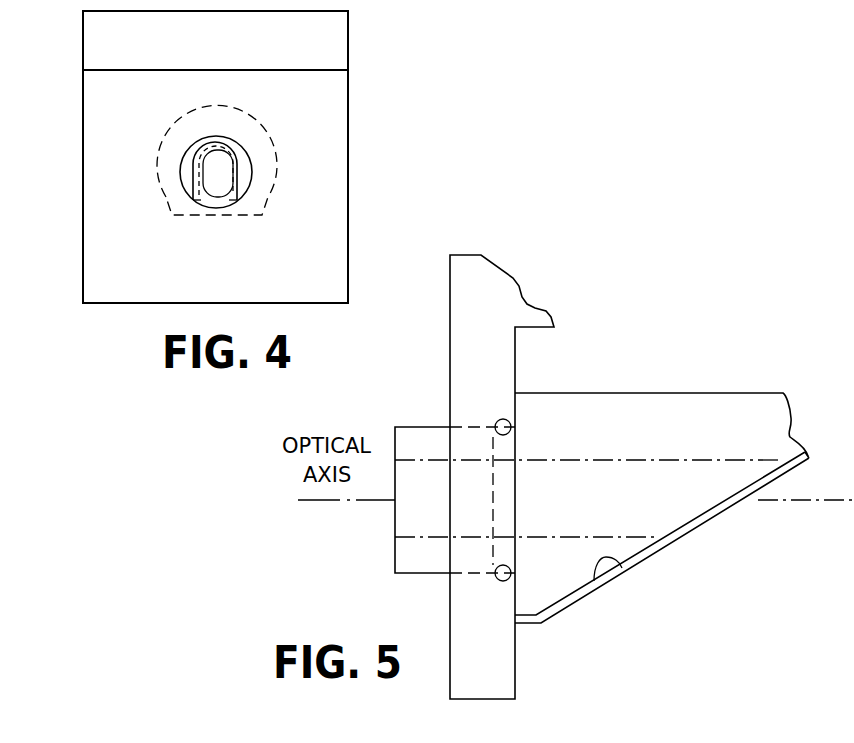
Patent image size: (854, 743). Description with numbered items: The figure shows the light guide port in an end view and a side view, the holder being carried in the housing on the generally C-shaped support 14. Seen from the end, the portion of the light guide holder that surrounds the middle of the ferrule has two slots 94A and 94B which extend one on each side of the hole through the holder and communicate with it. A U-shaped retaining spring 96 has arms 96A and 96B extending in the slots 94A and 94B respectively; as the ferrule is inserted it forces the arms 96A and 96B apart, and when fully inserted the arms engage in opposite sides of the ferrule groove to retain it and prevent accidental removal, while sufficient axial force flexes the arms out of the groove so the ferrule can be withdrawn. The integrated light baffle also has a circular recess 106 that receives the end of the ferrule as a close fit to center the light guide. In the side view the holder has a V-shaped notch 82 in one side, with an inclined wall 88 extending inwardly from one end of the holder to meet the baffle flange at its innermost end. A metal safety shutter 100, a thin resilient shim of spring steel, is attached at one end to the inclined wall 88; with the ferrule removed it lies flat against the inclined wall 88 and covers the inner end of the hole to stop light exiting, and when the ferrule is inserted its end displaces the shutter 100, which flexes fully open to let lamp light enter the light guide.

In FIG. 4, the support 14 is at (356, 44).
In FIG. 4, the circular recess 106 is at (263, 130).
In FIG. 4, the slot 94A is at (237, 173).
In FIG. 5, the slot 94A is at (508, 490).
In FIG. 4, the slot 94B is at (199, 172).
In FIG. 4, the spring arm 96A is at (242, 190).
In FIG. 4, the spring arm 96B is at (195, 191).
In FIG. 5, the U-shaped retaining spring 96 is at (503, 419).
In FIG. 5, the V-shaped notch 82 is at (770, 512).
In FIG. 5, the safety shutter 100 is at (687, 548).
In FIG. 5, the inclined wall 88 is at (622, 568).